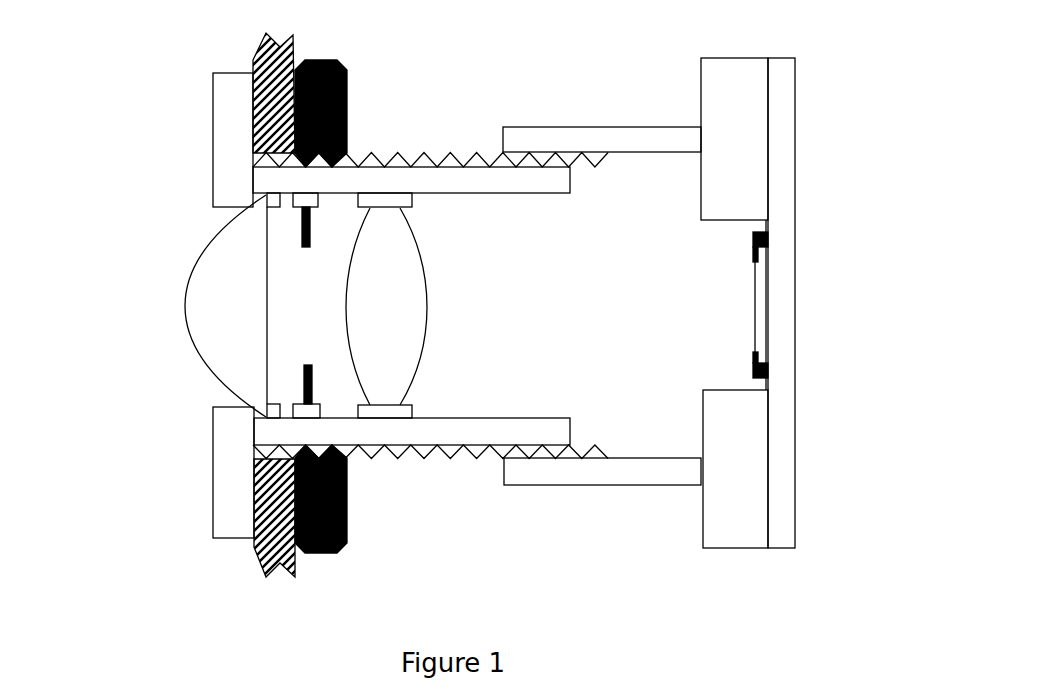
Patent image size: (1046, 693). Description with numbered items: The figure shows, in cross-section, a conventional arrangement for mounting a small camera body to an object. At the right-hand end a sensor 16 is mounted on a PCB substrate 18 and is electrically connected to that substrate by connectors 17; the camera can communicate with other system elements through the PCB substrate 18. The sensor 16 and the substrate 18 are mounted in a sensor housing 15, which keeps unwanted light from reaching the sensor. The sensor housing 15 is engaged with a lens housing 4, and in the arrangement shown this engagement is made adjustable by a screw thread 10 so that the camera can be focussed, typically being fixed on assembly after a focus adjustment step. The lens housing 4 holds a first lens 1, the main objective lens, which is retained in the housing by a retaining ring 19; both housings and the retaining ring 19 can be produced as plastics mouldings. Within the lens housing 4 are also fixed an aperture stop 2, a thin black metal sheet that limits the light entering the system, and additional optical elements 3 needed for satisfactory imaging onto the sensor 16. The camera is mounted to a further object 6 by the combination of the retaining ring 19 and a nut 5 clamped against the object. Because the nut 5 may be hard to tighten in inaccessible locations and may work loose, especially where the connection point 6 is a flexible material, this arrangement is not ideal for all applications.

The first lens 1 is at (203, 260).
The aperture stop 2 is at (311, 232).
The additional optical elements 3 is at (386, 237).
The lens housing 4 is at (441, 488).
The nut 5 is at (348, 85).
The further object 6 is at (254, 513).
The screw thread 10 is at (543, 152).
The sensor housing 15 is at (676, 114).
The sensor 16 is at (769, 312).
The connectors 17 is at (768, 232).
The PCB substrate 18 is at (781, 457).
The retaining ring 19 is at (228, 194).